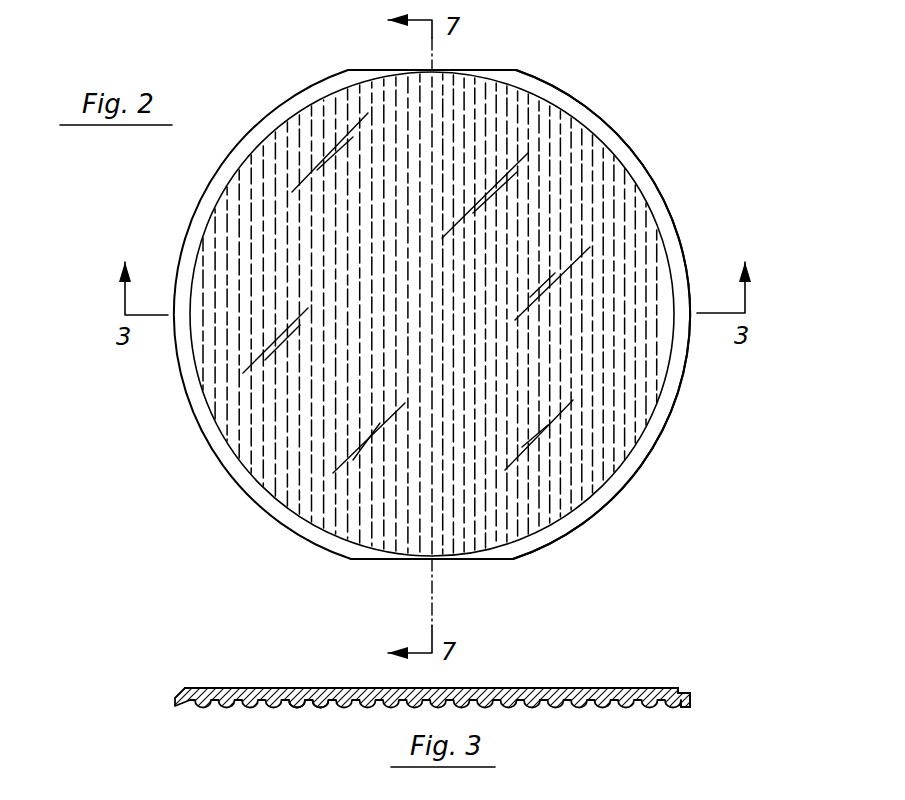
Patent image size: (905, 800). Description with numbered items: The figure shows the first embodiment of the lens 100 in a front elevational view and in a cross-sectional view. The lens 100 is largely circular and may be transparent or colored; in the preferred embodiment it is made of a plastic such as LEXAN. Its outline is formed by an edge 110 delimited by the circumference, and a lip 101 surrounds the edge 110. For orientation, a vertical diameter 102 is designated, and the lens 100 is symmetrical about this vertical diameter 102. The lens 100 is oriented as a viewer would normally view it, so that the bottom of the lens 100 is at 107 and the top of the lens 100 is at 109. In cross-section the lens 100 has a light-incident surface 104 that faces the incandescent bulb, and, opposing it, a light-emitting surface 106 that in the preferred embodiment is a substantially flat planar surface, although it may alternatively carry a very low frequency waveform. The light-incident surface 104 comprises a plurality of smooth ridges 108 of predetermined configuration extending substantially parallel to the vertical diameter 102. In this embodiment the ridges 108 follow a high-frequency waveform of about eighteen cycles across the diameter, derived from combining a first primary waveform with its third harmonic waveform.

In FIG. 2, the lens 100 is at (643, 130).
In FIG. 3, the lens 100 is at (190, 682).
In FIG. 2, the lip 101 is at (648, 187).
In FIG. 3, the lip 101 is at (690, 706).
In FIG. 2, the vertical diameter 102 is at (434, 580).
In FIG. 3, the light-incident surface 104 is at (547, 708).
In FIG. 2, the light-emitting surface 106 is at (587, 363).
In FIG. 3, the light-emitting surface 106 is at (570, 686).
In FIG. 2, the bottom of the lens 107 is at (380, 562).
In FIG. 2, the ridges 108 is at (290, 493).
In FIG. 3, the ridges 108 is at (318, 709).
In FIG. 2, the top of the lens 109 is at (487, 70).
In FIG. 2, the edge 110 is at (630, 480).
In FIG. 3, the edge 110 is at (680, 687).